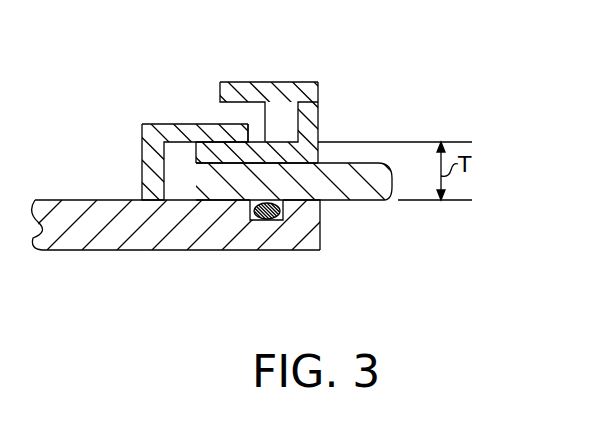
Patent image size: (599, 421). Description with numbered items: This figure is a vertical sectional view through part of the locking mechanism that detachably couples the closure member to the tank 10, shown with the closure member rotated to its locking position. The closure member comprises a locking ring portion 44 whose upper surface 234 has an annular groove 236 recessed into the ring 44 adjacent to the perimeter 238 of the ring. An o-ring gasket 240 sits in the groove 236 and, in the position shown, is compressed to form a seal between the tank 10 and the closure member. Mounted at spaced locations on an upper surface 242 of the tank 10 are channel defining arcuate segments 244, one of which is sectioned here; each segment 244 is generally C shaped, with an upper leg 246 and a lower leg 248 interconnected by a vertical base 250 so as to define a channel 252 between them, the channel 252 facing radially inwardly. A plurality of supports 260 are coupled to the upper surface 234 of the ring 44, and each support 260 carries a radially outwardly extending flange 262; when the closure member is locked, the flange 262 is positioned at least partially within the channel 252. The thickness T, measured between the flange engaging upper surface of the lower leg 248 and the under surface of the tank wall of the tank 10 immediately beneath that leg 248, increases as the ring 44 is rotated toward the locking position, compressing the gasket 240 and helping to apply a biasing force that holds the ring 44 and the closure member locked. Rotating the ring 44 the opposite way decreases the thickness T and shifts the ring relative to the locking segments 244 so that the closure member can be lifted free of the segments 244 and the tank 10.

The tank 10 is at (373, 200).
The locking ring portion 44 is at (87, 236).
The upper surface 234 is at (75, 198).
The annular groove 236 is at (280, 223).
The perimeter 238 is at (322, 222).
The o-ring gasket 240 is at (258, 222).
The upper surface of the tank 242 is at (343, 160).
The channel defining arcuate segment 244 is at (287, 82).
The upper leg 246 is at (232, 82).
The lower leg 248 is at (264, 155).
The vertical base 250 is at (320, 112).
The channel 252 is at (248, 112).
The support 260 is at (141, 158).
The flange 262 is at (181, 129).